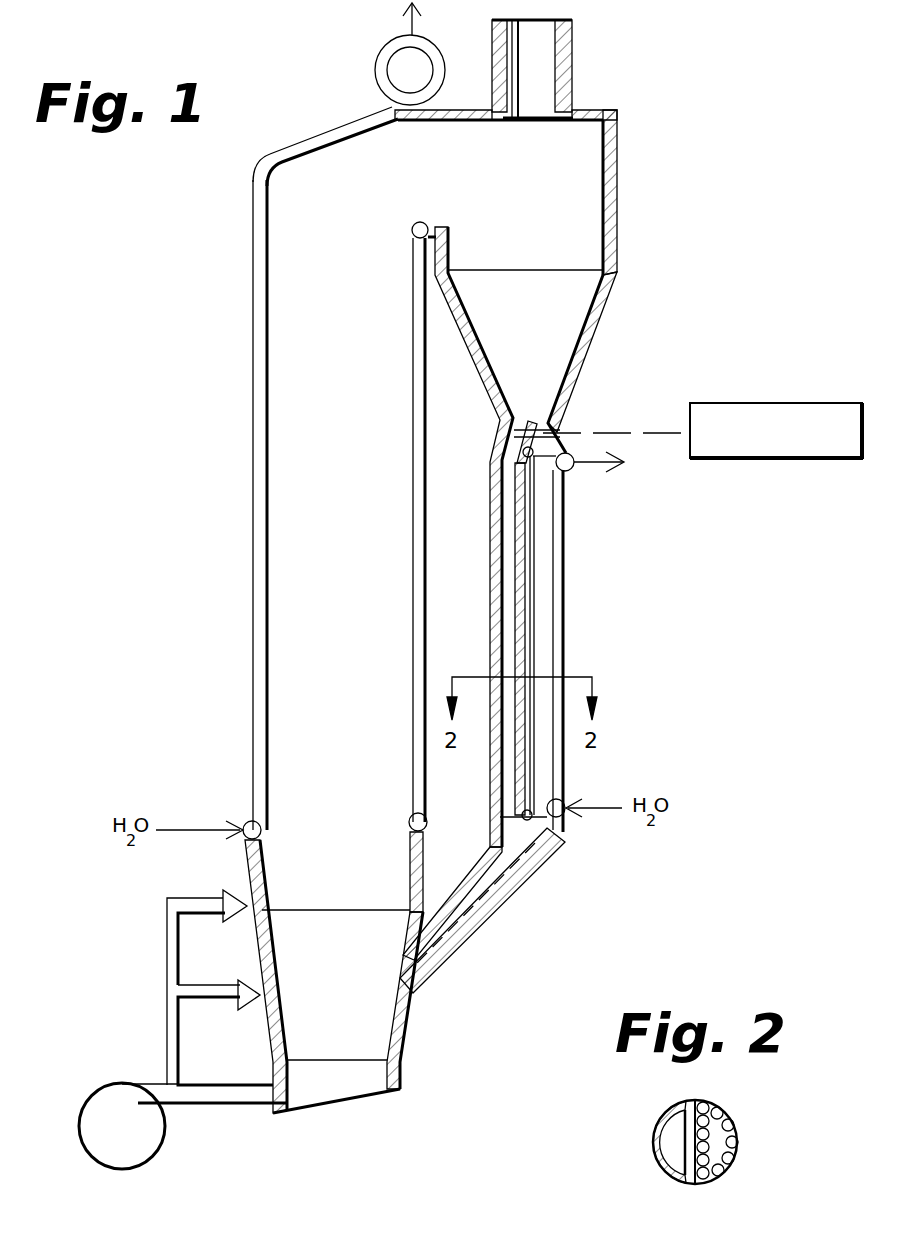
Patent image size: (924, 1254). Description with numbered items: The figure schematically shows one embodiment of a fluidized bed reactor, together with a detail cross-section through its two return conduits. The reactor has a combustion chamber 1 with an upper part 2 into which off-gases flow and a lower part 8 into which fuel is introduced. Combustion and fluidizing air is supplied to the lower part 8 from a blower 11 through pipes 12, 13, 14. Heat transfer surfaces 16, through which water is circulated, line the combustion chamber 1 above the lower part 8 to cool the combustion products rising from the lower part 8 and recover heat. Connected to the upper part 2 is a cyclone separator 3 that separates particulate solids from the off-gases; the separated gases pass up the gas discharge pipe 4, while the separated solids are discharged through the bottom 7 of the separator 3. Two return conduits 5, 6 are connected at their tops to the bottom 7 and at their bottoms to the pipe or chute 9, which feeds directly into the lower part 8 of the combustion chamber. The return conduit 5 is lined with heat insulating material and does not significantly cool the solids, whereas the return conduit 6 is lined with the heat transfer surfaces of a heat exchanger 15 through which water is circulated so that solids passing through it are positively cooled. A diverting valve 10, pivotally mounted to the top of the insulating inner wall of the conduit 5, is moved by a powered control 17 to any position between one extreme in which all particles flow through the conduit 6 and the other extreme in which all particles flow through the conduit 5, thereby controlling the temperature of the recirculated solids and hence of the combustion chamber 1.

In FIG. 1, the combustion chamber 1 is at (264, 702).
In FIG. 1, the upper part 2 is at (288, 192).
In FIG. 1, the cyclone separator 3 is at (580, 190).
In FIG. 1, the gas discharge pipe 4 is at (548, 62).
In FIG. 1, the return conduit 5 is at (518, 562).
In FIG. 2, the return conduit 5 is at (678, 1142).
In FIG. 1, the return conduit 6 is at (555, 532).
In FIG. 2, the return conduit 6 is at (716, 1135).
In FIG. 1, the bottom of the separator 7 is at (563, 318).
In FIG. 1, the lower part 8 is at (297, 938).
In FIG. 1, the pipe or chute 9 is at (432, 932).
In FIG. 1, the diverting valve 10 is at (557, 432).
In FIG. 1, the blower 11 is at (132, 1148).
In FIG. 1, the pipe 12 is at (230, 1100).
In FIG. 1, the pipe 13 is at (196, 1005).
In FIG. 1, the pipe 14 is at (196, 914).
In FIG. 1, the heat exchanger 15 is at (558, 604).
In FIG. 2, the heat exchanger 15 is at (726, 1160).
In FIG. 1, the heat transfer surfaces 16 is at (258, 537).
In FIG. 1, the powered control 17 is at (750, 450).